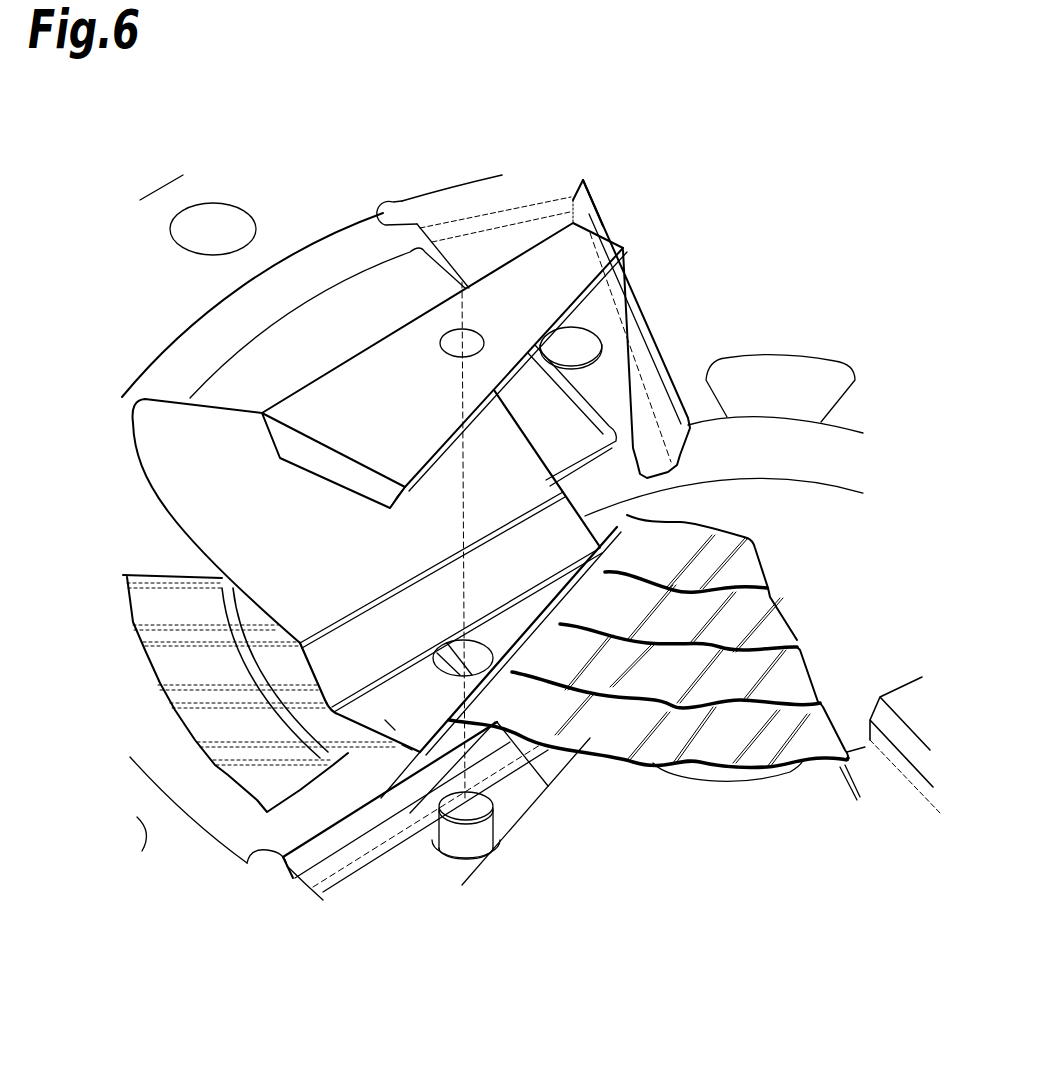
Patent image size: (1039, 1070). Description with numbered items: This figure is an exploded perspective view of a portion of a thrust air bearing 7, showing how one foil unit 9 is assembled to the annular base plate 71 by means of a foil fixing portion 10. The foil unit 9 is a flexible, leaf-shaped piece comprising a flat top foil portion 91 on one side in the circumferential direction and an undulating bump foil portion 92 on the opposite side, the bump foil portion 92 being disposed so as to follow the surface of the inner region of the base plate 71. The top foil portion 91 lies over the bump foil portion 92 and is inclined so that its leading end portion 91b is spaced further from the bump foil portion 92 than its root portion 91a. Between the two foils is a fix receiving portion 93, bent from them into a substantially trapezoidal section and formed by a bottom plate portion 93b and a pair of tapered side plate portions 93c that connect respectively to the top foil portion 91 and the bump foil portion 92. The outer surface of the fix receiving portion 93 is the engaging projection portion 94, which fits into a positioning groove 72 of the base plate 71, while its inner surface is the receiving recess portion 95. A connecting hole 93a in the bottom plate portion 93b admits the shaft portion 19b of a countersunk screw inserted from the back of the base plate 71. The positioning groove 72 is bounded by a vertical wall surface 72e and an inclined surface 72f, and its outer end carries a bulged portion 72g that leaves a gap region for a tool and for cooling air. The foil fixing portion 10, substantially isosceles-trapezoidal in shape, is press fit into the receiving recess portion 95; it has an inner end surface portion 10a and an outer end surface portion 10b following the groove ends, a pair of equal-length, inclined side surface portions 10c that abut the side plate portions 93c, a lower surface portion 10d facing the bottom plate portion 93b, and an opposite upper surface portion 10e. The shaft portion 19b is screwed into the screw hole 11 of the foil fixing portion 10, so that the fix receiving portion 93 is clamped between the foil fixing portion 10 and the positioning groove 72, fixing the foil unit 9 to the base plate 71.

The thrust air bearing 7 is at (230, 153).
The foil unit 9 is at (150, 507).
The foil fixing portion 10 is at (417, 480).
The inner end surface portion 10a is at (603, 226).
The outer end surface portion 10b is at (300, 456).
The side surface portion 10c is at (330, 372).
The lower surface portion 10d is at (347, 493).
The upper surface portion 10e is at (405, 367).
The screw hole 11 is at (483, 330).
The shaft portion 19b is at (468, 843).
The base plate 71 is at (213, 808).
The positioning groove 72 is at (581, 605).
The vertical wall surface 72e is at (320, 877).
The inclined surface 72f is at (303, 863).
The bulged portion 72g is at (263, 867).
The top foil portion 91 is at (150, 423).
The root portion 91a is at (340, 623).
The leading end portion 91b is at (167, 397).
The bump foil portion 92 is at (148, 665).
The fix receiving portion 93 is at (460, 695).
The connecting hole 93a is at (483, 643).
The bottom plate portion 93b is at (413, 680).
The side plate portion 93c is at (557, 597).
The engaging projection portion 94 is at (407, 743).
The receiving recess portion 95 is at (390, 725).